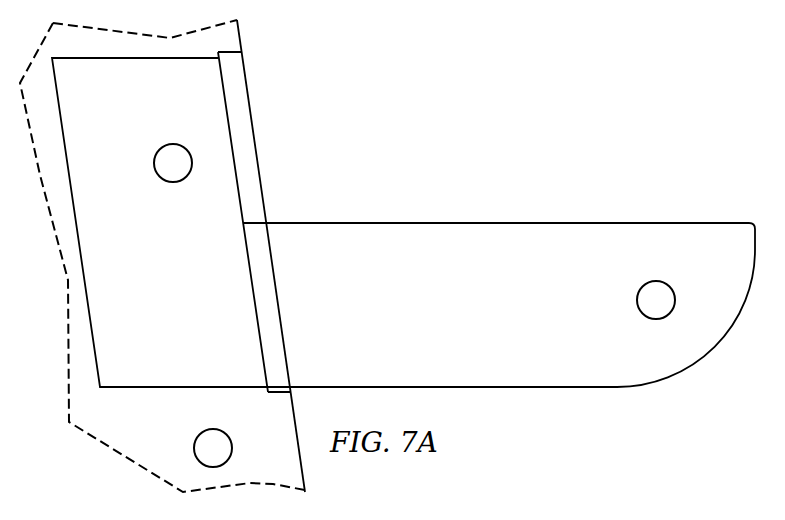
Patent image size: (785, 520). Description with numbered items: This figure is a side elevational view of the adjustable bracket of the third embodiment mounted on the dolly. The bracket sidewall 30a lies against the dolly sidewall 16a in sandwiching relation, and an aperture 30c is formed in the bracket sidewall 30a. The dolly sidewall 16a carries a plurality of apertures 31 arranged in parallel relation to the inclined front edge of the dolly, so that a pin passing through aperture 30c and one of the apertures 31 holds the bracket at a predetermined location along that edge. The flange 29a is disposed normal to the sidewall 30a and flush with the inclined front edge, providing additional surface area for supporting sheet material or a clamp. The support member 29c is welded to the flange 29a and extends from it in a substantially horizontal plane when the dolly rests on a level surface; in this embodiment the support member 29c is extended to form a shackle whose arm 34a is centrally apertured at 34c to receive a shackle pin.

The sidewall 16a is at (162, 256).
The flange 29a is at (252, 142).
The support member 29c is at (499, 305).
The sidewall 30a is at (160, 222).
The aperture 30c is at (163, 168).
The apertures 31 is at (203, 456).
The arm 34a is at (686, 318).
The aperture 34c is at (645, 307).